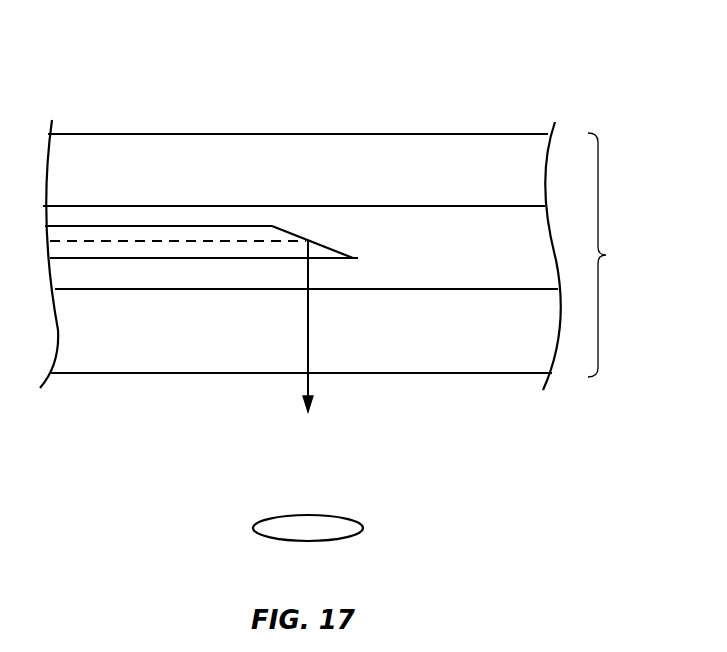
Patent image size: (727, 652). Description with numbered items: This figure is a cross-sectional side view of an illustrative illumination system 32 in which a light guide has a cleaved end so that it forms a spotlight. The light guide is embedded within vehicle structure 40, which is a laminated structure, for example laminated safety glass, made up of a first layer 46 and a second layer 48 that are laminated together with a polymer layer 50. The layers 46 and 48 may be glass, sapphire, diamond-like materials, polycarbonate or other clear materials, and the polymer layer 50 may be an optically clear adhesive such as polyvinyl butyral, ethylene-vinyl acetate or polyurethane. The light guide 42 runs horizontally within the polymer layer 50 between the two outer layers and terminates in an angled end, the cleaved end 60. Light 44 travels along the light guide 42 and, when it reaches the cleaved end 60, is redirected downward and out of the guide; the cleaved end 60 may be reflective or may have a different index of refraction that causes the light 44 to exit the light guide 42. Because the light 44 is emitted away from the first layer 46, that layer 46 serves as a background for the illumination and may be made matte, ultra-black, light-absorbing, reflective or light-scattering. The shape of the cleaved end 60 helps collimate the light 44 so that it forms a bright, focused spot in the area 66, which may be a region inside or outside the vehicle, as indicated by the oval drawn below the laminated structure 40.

The display / optical system 32 is at (550, 58).
The vehicle structure 40 is at (610, 255).
The light guide 42 is at (187, 225).
The light 44 is at (115, 243).
The first layer 46 is at (428, 152).
The second layer 48 is at (385, 357).
The polymer layer 50 is at (457, 275).
The cleaved end 60 is at (328, 241).
The area 66 is at (330, 513).